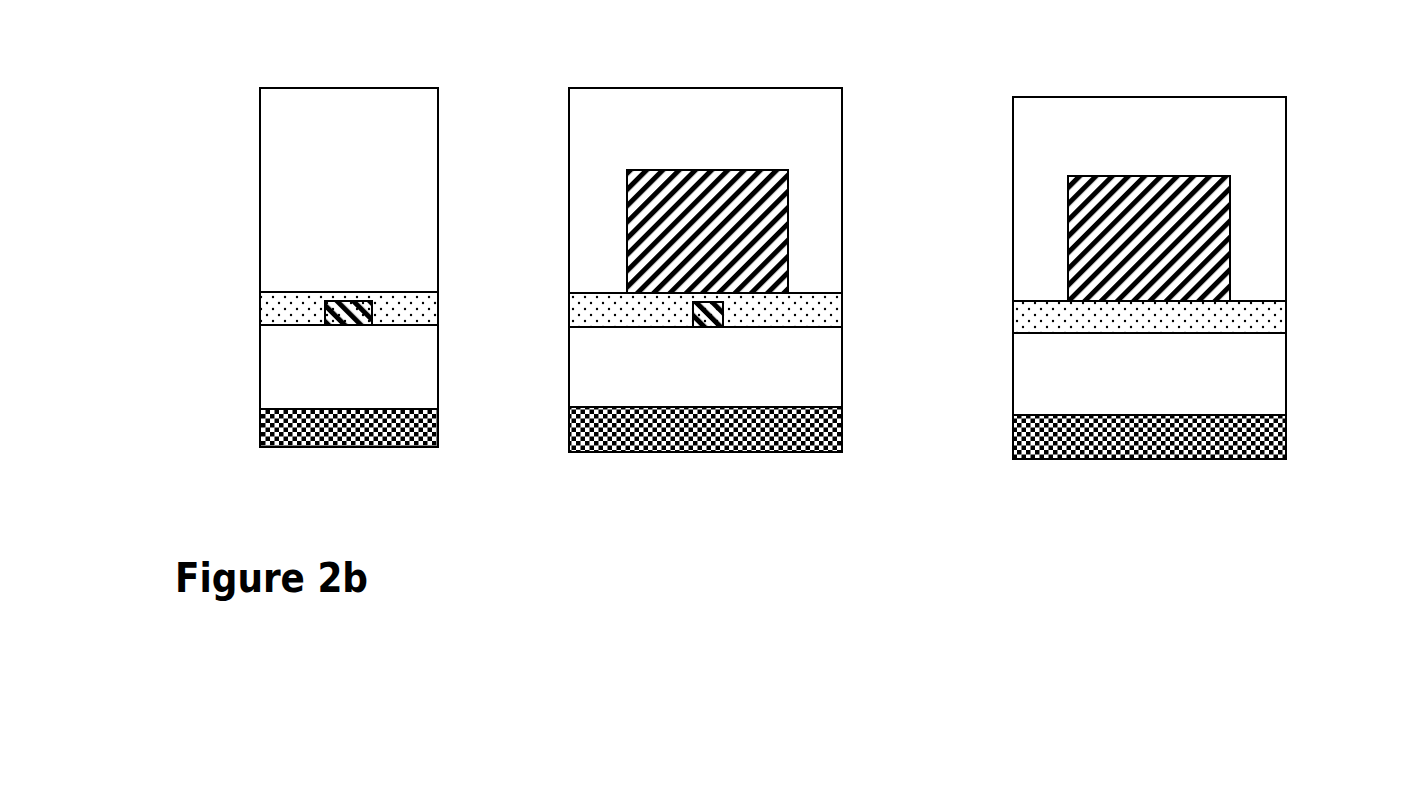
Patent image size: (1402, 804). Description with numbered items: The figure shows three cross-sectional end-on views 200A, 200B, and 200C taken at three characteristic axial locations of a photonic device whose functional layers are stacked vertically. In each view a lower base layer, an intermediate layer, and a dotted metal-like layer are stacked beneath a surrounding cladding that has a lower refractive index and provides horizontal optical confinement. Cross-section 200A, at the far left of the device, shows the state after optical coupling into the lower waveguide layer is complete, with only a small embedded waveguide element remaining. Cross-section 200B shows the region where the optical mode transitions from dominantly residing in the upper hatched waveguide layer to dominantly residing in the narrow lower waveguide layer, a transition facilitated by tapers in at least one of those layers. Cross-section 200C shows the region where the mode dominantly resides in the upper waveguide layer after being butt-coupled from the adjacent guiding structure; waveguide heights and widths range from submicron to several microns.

The cross-sectional view 200A is at (284, 69).
The cross-sectional view 200B is at (621, 67).
The cross-sectional view 200C is at (1064, 75).